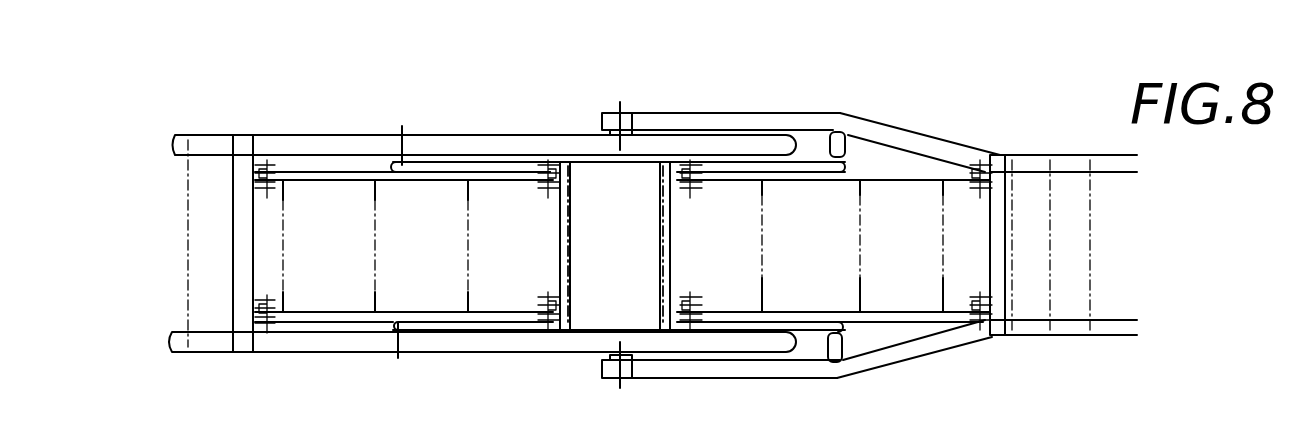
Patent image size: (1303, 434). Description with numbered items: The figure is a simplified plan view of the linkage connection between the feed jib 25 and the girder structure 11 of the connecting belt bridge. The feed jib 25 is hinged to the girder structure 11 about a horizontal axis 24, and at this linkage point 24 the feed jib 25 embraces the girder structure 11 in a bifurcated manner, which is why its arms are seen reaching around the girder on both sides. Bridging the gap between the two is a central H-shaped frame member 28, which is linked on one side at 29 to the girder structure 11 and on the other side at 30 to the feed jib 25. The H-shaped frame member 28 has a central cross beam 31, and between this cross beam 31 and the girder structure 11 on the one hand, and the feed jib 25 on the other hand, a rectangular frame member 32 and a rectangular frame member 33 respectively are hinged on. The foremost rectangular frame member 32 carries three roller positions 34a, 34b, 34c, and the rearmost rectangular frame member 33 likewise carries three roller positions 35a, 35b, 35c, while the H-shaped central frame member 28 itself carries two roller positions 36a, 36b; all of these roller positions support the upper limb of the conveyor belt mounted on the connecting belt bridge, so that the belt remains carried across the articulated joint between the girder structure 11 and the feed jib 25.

The girder structure 11 is at (310, 146).
The horizontal axis 24 is at (625, 122).
The feed jib 25 is at (932, 150).
The H-shaped frame member 28 is at (495, 163).
The linkage point to girder structure 29 is at (398, 162).
The linkage point to feed jib 30 is at (848, 137).
The central cross beam 31 is at (585, 258).
The rectangular frame member 32 is at (327, 312).
The rectangular frame member 33 is at (900, 315).
The roller position 34a is at (283, 182).
The roller position 34b is at (373, 298).
The roller position 34c is at (421, 246).
The roller position 35a is at (762, 253).
The roller position 35b is at (860, 245).
The roller position 35c is at (943, 248).
The roller position 36a is at (568, 228).
The roller position 36b is at (660, 262).